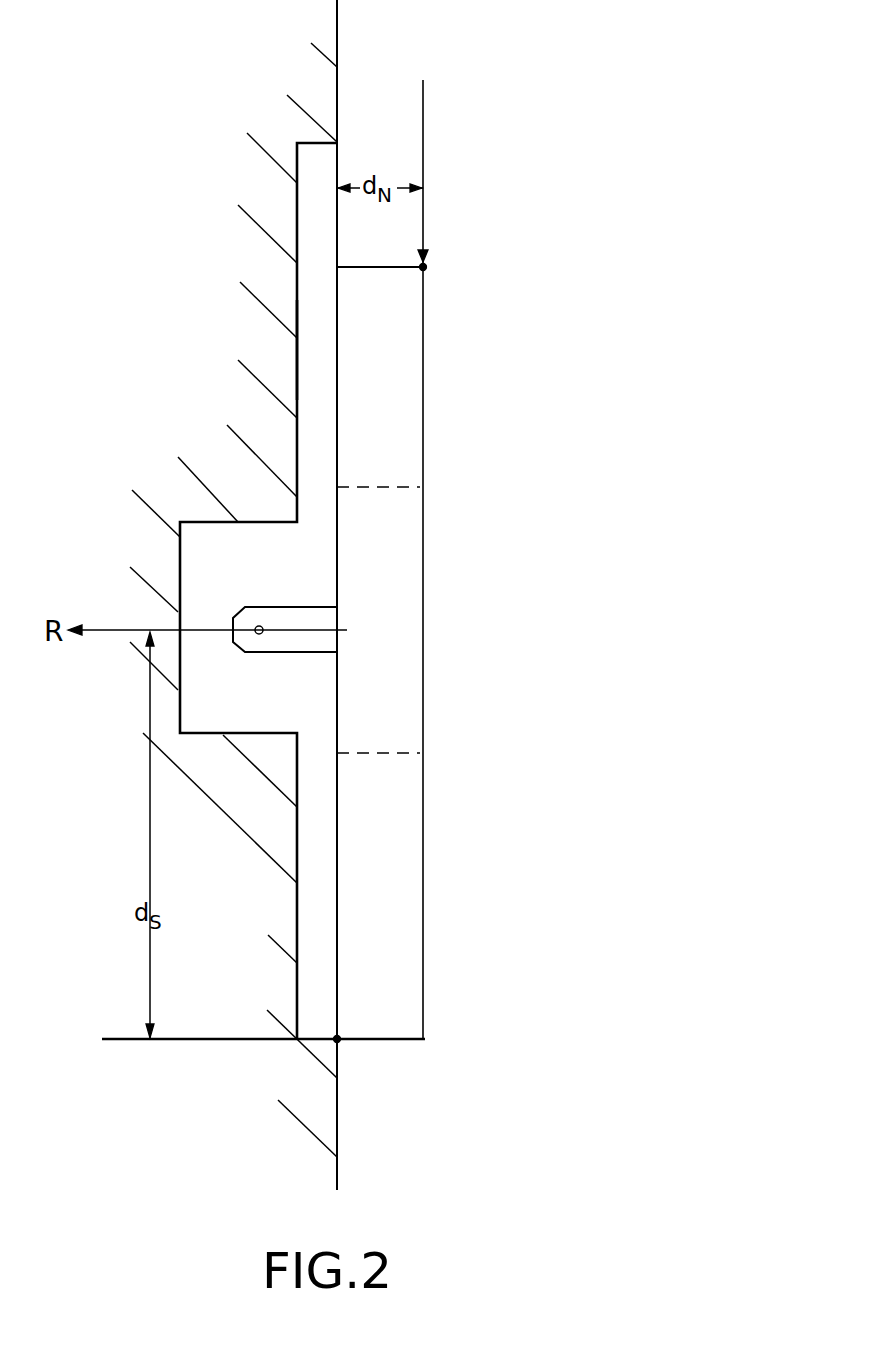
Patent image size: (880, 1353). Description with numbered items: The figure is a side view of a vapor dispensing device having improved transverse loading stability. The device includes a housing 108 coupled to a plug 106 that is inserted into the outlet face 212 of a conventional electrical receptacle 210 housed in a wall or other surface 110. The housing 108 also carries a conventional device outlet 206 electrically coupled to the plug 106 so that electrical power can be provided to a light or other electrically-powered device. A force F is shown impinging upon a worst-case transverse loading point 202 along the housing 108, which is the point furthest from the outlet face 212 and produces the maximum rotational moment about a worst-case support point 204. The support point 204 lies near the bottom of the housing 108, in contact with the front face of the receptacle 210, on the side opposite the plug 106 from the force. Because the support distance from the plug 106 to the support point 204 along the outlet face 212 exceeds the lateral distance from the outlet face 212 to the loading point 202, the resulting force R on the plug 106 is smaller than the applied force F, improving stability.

The plug 106 is at (276, 628).
The housing 108 is at (407, 378).
The wall or other surface 110 is at (245, 150).
The worst-case transverse loading point 202 is at (427, 267).
The worst-case support point 204 is at (340, 1042).
The device outlet 206 is at (407, 538).
The electrical receptacle 210 is at (312, 345).
The outlet face 212 is at (340, 327).